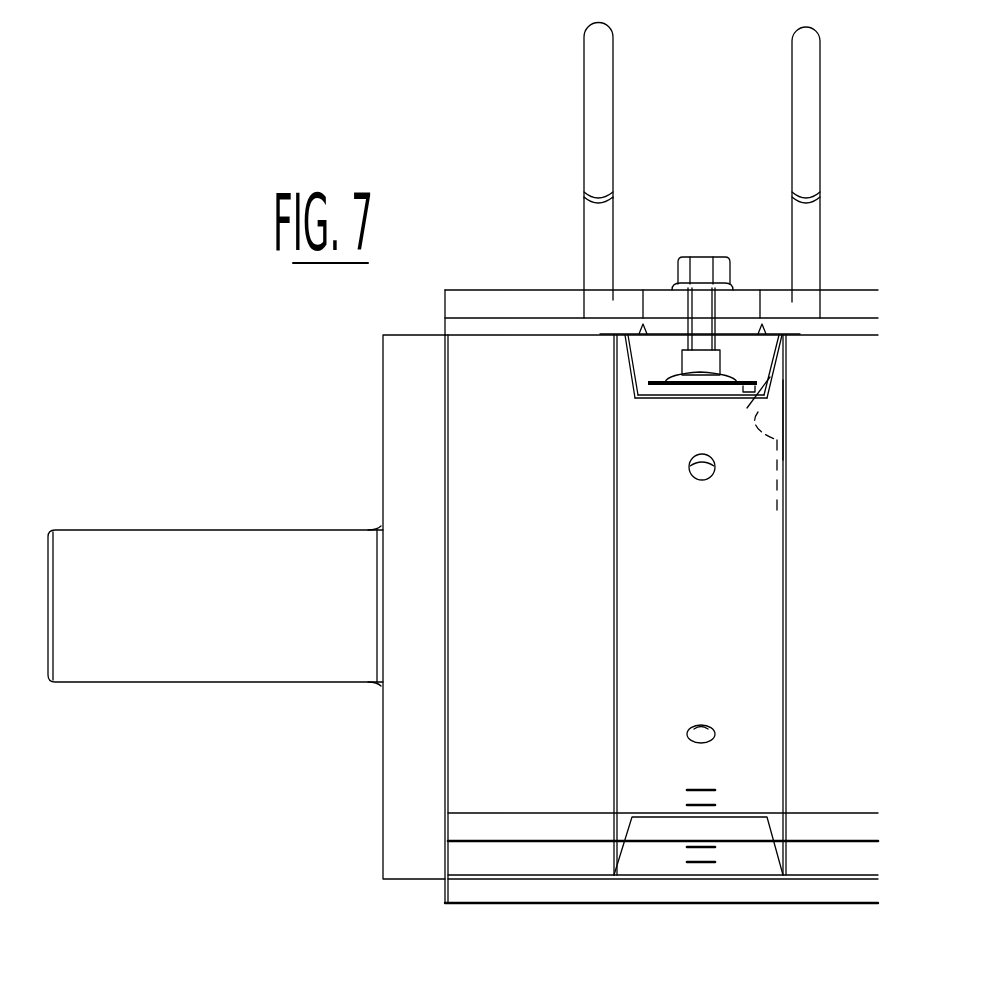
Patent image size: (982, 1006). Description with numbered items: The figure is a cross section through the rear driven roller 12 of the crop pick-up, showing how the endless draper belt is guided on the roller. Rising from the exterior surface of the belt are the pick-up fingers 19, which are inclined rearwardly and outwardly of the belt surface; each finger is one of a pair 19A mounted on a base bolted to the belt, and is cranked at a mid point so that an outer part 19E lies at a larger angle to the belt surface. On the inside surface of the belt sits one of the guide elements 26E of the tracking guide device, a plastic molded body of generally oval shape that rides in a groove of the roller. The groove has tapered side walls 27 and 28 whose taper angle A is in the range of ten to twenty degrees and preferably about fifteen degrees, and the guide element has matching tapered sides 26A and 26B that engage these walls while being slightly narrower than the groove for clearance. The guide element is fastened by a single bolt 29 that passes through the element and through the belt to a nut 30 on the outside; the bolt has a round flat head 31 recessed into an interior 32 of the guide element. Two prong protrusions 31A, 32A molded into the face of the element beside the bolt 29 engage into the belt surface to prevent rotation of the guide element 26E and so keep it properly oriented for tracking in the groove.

The rear driven roller 12 is at (392, 413).
The pick-up fingers 19 is at (661, 179).
The finger pair 19A is at (593, 243).
The outer part of finger 19E is at (602, 122).
The guide element side 26A is at (686, 446).
The guide element side 26B is at (779, 380).
The guide elements 26E is at (640, 358).
The tapered side wall 27 is at (631, 361).
The tapered side wall 28 is at (772, 375).
The bolt 29 is at (712, 348).
The nut 30 is at (720, 277).
The round flat head 31 is at (725, 383).
The prong protrusion 31A is at (640, 332).
The interior of guide element 32 is at (656, 364).
The prong protrusion 32A is at (703, 342).
The taper angle A is at (770, 413).